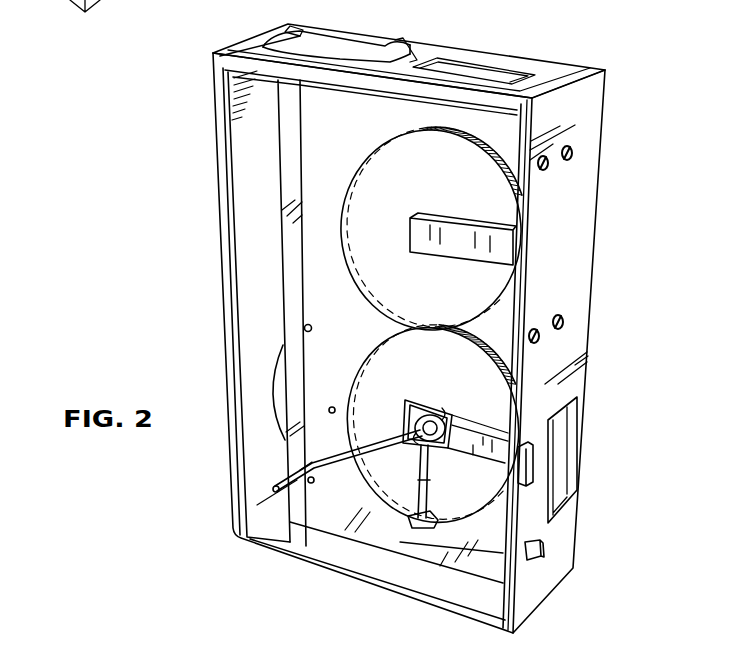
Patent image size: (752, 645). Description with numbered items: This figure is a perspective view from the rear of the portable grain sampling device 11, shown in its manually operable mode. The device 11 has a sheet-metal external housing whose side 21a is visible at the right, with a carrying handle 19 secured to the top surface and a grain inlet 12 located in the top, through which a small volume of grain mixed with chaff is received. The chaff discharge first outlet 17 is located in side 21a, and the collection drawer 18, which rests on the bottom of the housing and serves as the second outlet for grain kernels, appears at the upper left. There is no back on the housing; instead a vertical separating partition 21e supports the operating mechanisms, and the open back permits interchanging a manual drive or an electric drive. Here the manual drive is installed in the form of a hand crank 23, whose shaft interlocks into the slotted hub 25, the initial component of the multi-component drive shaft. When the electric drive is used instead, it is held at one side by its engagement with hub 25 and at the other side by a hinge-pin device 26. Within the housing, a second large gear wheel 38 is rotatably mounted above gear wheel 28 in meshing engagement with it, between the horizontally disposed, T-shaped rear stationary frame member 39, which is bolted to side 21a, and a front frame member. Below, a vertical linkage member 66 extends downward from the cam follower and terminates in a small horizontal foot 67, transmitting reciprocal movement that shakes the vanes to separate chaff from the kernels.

The portable grain sampling device 11 is at (632, 77).
The grain inlet 12 is at (478, 68).
The first outlet 17 is at (563, 420).
The collection drawer 18 is at (130, 2).
The carrying handle 19 is at (290, 31).
The side 21a is at (580, 174).
The vertical separating partition 21e is at (323, 126).
The hand crank 23 is at (333, 456).
The slotted hub 25 is at (416, 400).
The hinge-pin device 26 is at (530, 474).
The gear wheel 28 is at (473, 397).
The second large gear wheel 38 is at (484, 212).
The rear stationary frame member 39 is at (468, 251).
The vertical linkage member 66 is at (425, 487).
The foot 67 is at (413, 512).